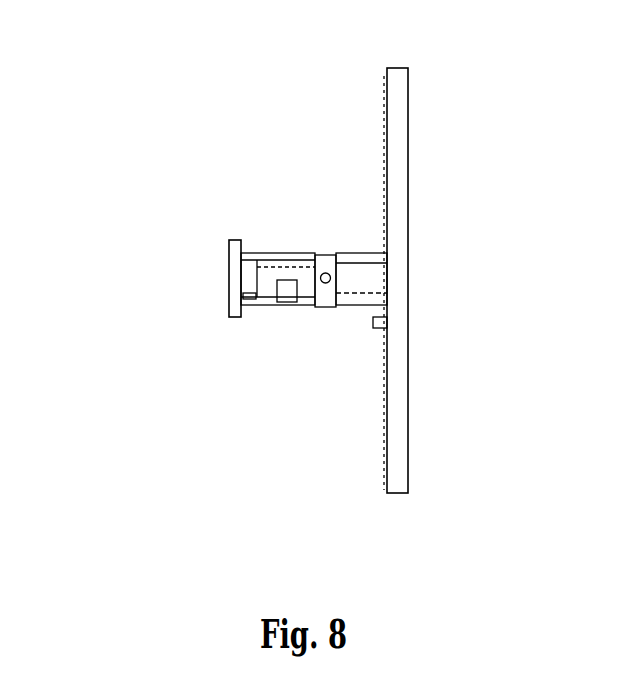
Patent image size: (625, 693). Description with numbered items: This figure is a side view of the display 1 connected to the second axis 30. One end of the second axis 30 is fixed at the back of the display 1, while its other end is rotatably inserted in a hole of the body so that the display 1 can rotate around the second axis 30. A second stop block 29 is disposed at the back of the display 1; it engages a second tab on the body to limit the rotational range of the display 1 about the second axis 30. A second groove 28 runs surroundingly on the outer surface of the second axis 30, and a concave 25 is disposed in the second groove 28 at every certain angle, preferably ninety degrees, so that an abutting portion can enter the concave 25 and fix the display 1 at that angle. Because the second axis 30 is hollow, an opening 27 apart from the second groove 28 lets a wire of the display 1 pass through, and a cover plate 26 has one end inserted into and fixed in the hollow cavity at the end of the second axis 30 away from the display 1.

The display 1 is at (480, 259).
The concave 25 is at (232, 206).
The cover plate 26 is at (144, 249).
The opening 27 is at (177, 378).
The second groove 28 is at (179, 420).
The second stop block 29 is at (321, 383).
The second axis 30 is at (437, 352).